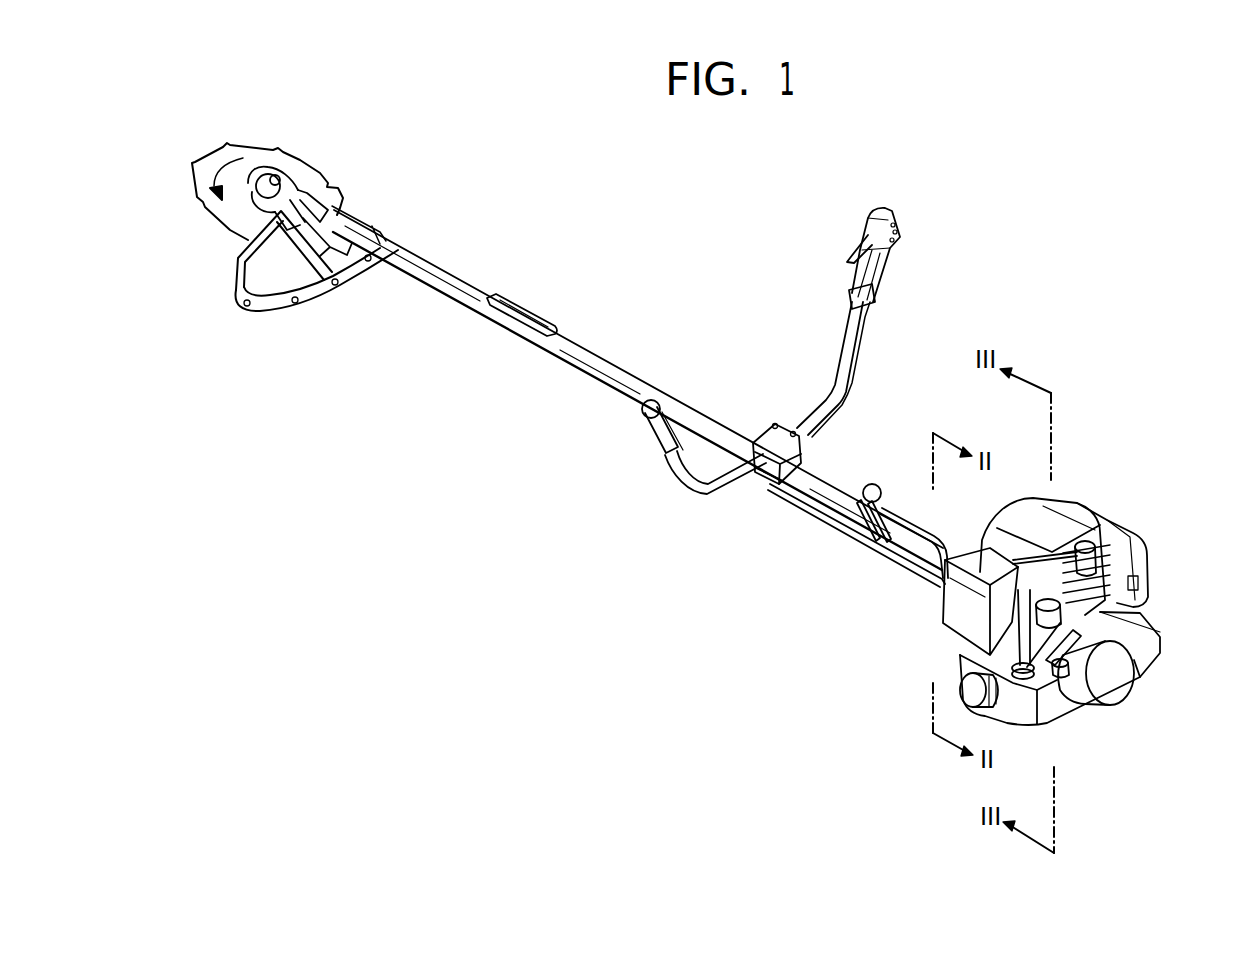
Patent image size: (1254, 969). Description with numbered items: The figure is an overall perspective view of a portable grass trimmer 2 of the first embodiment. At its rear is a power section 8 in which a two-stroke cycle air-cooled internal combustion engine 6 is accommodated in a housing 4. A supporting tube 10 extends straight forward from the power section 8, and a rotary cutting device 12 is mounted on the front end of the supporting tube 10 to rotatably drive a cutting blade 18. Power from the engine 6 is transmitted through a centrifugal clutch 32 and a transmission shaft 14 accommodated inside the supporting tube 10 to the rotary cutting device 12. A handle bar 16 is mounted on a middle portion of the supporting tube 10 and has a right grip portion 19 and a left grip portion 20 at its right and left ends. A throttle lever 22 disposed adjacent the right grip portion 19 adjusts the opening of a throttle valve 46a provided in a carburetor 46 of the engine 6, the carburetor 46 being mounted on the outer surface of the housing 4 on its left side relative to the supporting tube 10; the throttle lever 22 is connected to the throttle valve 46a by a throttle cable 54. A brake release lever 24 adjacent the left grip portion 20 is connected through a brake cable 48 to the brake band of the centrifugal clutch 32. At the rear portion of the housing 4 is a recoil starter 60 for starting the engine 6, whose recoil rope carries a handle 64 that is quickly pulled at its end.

The portable grass trimmer 2 is at (545, 252).
The housing 4 is at (1077, 523).
The internal combustion engine 6 is at (1127, 520).
The power section 8 is at (1020, 480).
The supporting tube 10 is at (605, 345).
The rotary cutting device 12 is at (314, 152).
The transmission shaft 14 is at (522, 325).
The handle bar 16 is at (840, 311).
The cutting blade 18 is at (213, 160).
The right grip portion 19 is at (880, 288).
The left grip portion 20 is at (667, 450).
The throttle lever 22 is at (863, 233).
The brake release lever 24 is at (650, 440).
The centrifugal clutch 32 is at (957, 616).
The carburetor 46 is at (990, 548).
The throttle valve 46a is at (1013, 570).
The brake cable 48 is at (790, 493).
The throttle cable 54 is at (860, 383).
The recoil starter 60 is at (1118, 676).
The handle 64 is at (1133, 643).